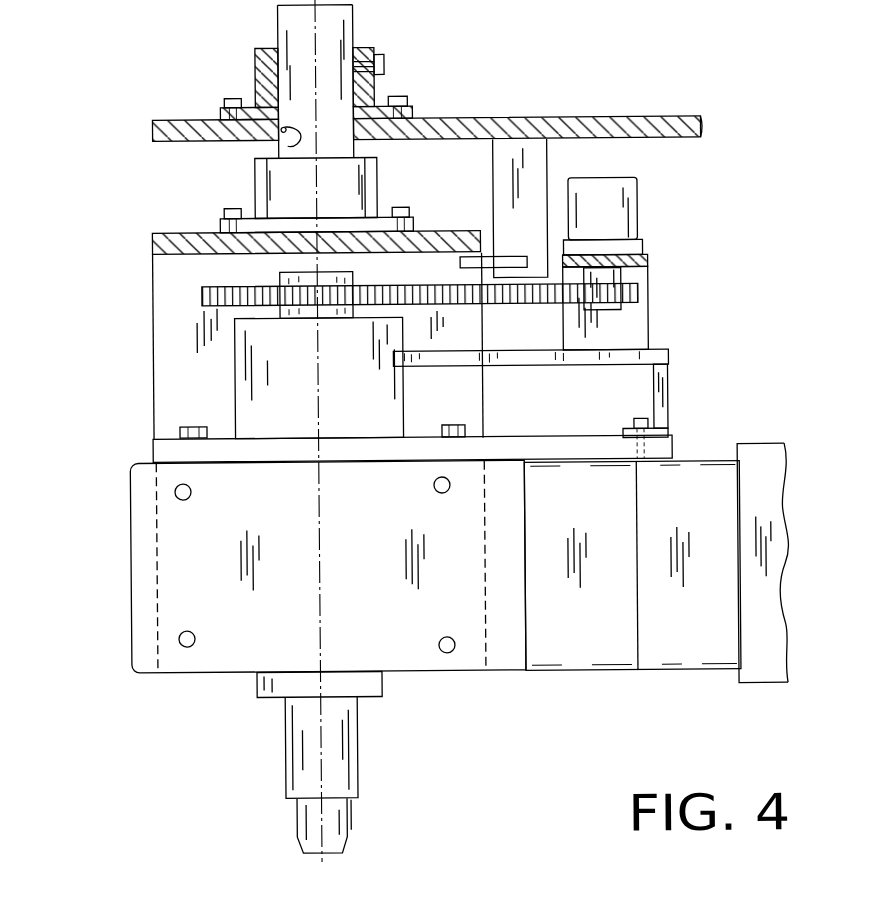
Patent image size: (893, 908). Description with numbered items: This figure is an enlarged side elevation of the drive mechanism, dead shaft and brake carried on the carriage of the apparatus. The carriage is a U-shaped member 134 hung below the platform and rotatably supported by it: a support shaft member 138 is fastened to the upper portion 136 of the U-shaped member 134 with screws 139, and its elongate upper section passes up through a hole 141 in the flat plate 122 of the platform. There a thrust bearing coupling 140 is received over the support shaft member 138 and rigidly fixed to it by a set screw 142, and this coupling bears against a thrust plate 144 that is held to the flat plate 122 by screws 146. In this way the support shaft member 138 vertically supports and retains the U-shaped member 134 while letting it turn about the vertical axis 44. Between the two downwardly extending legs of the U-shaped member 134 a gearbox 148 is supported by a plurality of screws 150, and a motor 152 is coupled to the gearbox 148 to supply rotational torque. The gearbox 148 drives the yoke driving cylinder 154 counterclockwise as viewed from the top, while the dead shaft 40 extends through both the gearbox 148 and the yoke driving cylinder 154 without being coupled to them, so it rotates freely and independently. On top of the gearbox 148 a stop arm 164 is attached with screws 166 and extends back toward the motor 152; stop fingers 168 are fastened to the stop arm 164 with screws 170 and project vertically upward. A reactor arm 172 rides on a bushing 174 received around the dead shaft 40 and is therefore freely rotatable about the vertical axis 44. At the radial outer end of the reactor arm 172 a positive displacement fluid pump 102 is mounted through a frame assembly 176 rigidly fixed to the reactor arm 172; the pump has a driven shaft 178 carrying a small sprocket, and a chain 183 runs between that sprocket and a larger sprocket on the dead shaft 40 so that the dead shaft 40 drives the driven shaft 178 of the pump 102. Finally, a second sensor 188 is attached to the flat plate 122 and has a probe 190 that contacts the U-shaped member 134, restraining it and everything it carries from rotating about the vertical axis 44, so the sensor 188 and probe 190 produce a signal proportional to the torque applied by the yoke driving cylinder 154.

The vertical axis 44 is at (315, 22).
The support shaft member 138 is at (358, 23).
The thrust bearing coupling 140 is at (261, 51).
The set screw 142 is at (388, 61).
The thrust plate 144 is at (258, 102).
The screws 146 is at (230, 99).
The flat plate 122 is at (156, 126).
The hole 141 is at (290, 146).
The screws 139 is at (402, 209).
The upper portion 136 is at (155, 241).
The dead shaft 40 is at (360, 297).
The chain 183 is at (499, 302).
The U-shaped member 134 is at (181, 331).
The bushing 174 is at (272, 378).
The screws 166 is at (193, 427).
The reactor arm 172 is at (548, 367).
The screws 170 is at (640, 421).
The stop fingers 168 is at (660, 392).
The stop arm 164 is at (663, 450).
The positive displacement fluid pump 102 is at (628, 200).
The driven shaft 178 is at (642, 278).
The frame assembly 176 is at (634, 322).
The second sensor 188 is at (537, 160).
The probe 190 is at (510, 264).
The gearbox 148 is at (135, 653).
The screws 150 is at (180, 630).
The motor 152 is at (763, 461).
The yoke driving cylinder 154 is at (291, 728).